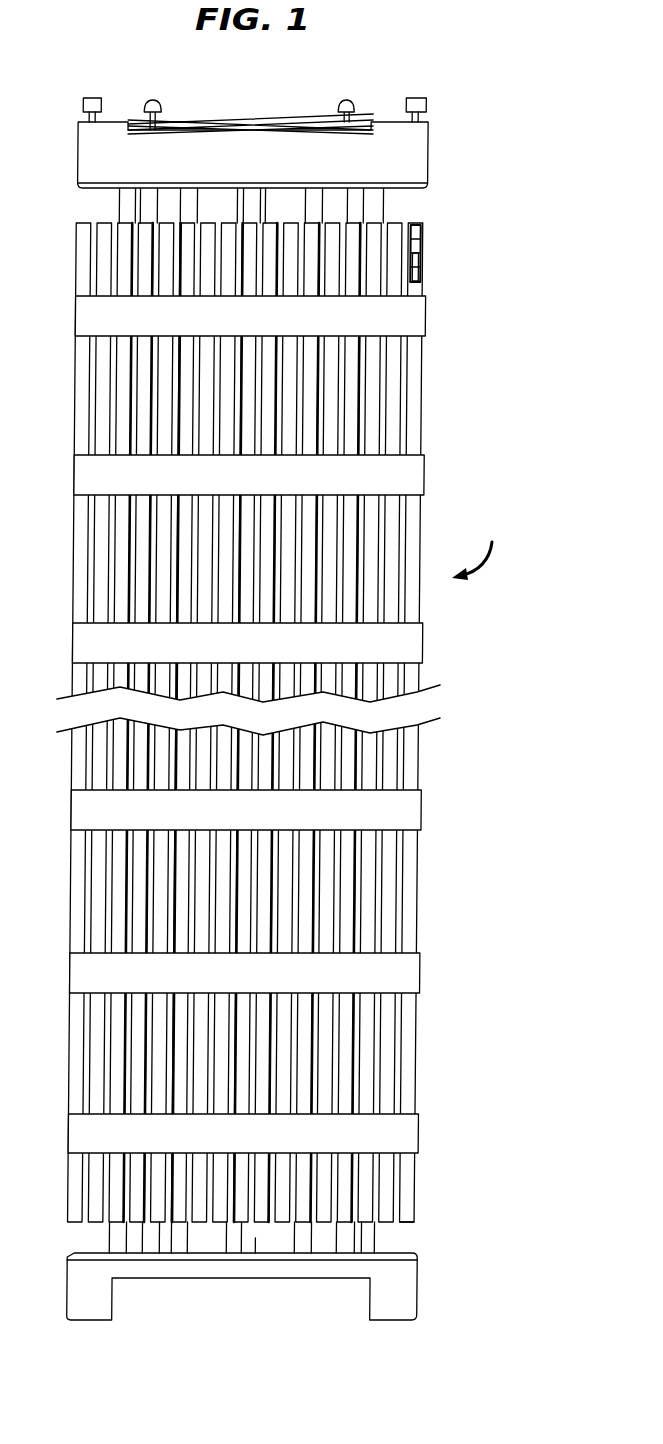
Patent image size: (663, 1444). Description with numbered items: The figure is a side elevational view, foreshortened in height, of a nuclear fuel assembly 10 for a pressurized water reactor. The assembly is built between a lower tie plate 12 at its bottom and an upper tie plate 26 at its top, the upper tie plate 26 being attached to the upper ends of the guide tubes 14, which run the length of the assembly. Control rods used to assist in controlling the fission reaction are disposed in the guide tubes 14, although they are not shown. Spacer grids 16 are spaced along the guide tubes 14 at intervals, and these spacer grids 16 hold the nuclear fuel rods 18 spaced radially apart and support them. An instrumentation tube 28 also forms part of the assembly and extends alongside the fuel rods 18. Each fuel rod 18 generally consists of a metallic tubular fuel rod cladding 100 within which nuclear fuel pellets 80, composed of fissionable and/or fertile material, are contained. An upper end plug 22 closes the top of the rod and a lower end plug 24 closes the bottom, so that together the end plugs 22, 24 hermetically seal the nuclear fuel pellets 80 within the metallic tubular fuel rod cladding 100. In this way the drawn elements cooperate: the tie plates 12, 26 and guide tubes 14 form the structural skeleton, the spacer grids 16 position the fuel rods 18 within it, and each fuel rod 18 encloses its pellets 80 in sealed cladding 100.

The nuclear fuel assembly 10 is at (477, 546).
The lower tie plate 12 is at (403, 1287).
The guide tubes 14 is at (385, 205).
The spacer grids 16 is at (413, 317).
The nuclear fuel rods 18 is at (413, 398).
The upper end plug 22 is at (423, 227).
The lower end plug 24 is at (410, 1225).
The upper tie plate 26 is at (407, 160).
The instrumentation tube 28 is at (257, 1238).
The nuclear fuel pellets 80 is at (417, 260).
The metallic tubular fuel rod cladding 100 is at (415, 287).